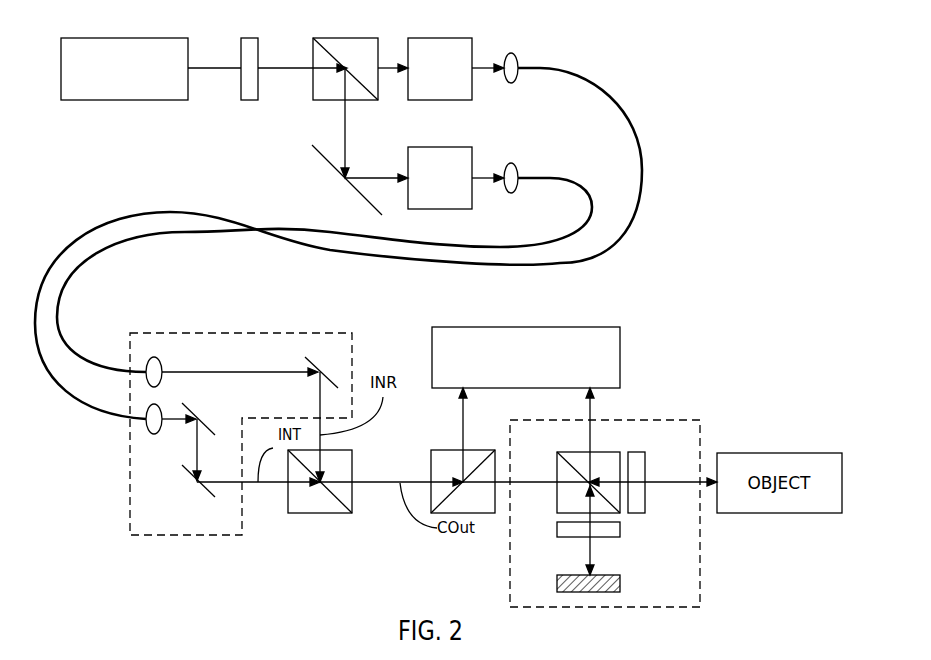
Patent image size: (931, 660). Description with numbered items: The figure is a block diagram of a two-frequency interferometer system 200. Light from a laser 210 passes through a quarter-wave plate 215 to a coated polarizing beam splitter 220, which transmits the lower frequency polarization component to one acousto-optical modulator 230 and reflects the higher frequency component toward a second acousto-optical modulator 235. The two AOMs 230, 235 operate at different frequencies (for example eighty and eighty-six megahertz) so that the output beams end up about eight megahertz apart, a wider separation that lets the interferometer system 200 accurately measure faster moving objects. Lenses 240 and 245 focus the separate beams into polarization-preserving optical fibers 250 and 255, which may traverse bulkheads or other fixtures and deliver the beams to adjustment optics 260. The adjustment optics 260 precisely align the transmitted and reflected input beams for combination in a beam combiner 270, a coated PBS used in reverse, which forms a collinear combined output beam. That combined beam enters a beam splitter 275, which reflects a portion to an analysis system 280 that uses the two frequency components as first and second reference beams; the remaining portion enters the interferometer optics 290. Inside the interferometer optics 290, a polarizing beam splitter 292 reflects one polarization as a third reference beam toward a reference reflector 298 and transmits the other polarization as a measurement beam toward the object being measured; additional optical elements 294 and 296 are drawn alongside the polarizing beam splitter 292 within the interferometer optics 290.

The interferometer system 200 is at (703, 51).
The laser 210 is at (108, 37).
The quarter-wave plate 215 is at (252, 37).
The coated polarizing beam splitter 220 is at (330, 37).
The acousto-optical modulator 230 is at (433, 37).
The acousto-optical modulator 235 is at (425, 145).
The lens 240 is at (513, 53).
The lens 245 is at (513, 163).
The optical fiber 250 is at (620, 117).
The optical fiber 255 is at (562, 177).
The adjustment optics 260 is at (225, 333).
The beam combiner 270 is at (353, 500).
The beam splitter 275 is at (448, 450).
The analysis system 280 is at (480, 327).
The interferometer optics 290 is at (675, 420).
The polarizing beam splitter 292 is at (573, 450).
The wave plate 294 is at (637, 452).
The wave plate 296 is at (555, 528).
The reference reflector 298 is at (622, 587).